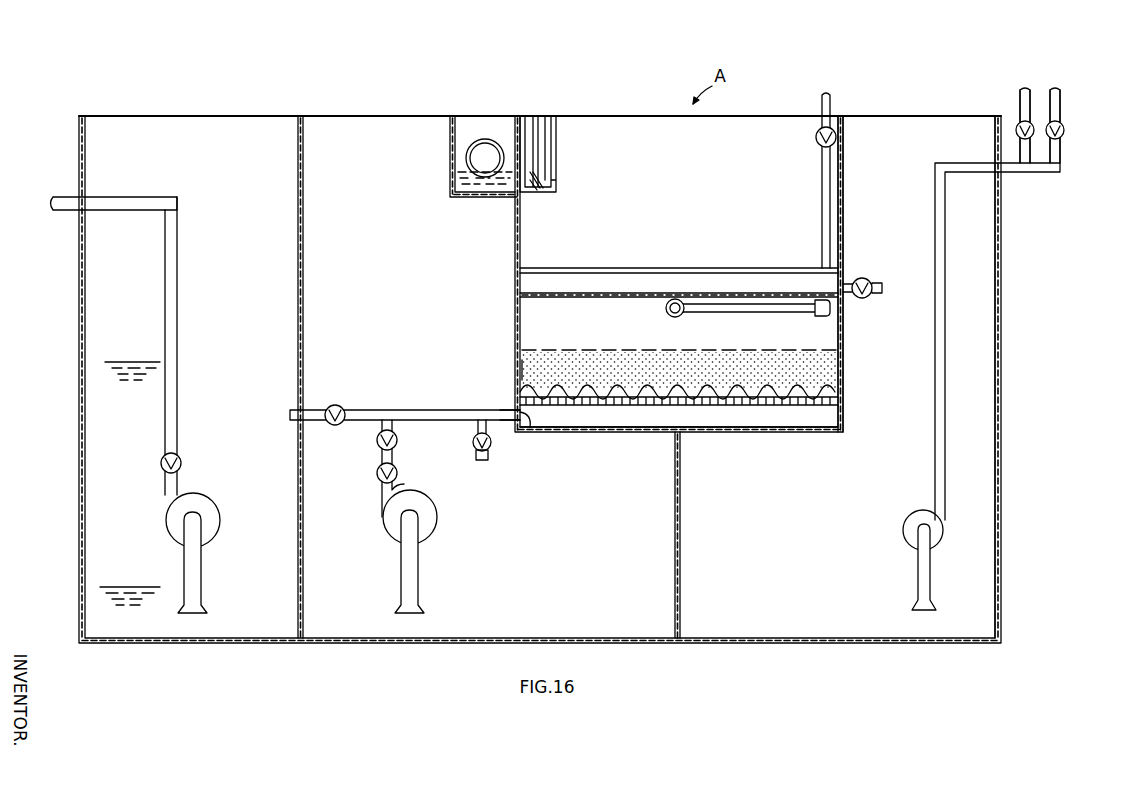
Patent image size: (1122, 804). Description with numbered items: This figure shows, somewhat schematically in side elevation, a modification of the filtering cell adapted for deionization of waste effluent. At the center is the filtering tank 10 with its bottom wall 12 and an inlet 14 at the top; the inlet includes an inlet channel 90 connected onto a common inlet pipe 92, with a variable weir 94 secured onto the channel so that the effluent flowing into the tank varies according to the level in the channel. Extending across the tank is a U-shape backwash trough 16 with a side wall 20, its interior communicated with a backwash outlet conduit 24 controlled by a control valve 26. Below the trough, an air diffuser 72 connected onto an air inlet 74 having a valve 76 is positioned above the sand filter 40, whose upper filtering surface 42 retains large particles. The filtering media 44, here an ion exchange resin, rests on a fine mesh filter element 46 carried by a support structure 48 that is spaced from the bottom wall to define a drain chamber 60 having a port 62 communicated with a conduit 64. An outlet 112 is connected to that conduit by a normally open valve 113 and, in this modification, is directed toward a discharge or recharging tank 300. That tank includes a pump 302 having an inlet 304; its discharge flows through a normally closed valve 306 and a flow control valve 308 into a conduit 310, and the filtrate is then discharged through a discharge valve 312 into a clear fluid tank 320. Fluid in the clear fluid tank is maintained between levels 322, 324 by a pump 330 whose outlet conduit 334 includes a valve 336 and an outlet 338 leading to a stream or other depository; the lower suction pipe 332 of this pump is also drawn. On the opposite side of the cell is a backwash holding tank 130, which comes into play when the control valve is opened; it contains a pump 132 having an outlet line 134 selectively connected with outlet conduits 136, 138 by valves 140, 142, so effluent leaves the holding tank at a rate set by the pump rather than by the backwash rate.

The filtering tank 10 is at (843, 150).
The bottom wall 12 is at (802, 432).
The inlet 14 is at (556, 140).
The trough 16 is at (668, 268).
The side wall 20 is at (710, 268).
The backwash outlet conduit 24 is at (848, 296).
The control valve 26 is at (866, 278).
The sand filter 40 is at (828, 357).
The upper filtering surface 42 is at (760, 350).
The filtering media 44 is at (522, 364).
The filter element 46 is at (828, 388).
The support structure 48 is at (835, 402).
The drain chamber 60 is at (590, 428).
The port 62 is at (530, 432).
The conduit 64 is at (502, 408).
The air diffuser 72 is at (668, 314).
The inlet 74 is at (822, 206).
The valve 76 is at (816, 138).
The inlet channel 90 is at (452, 160).
The inlet pipe 92 is at (468, 143).
The variable weir 94 is at (540, 178).
The outlet 112 is at (483, 460).
The valve 113 is at (472, 450).
The backwash holding tank 130 is at (904, 114).
The pump 132 is at (910, 516).
The outlet line 134 is at (945, 410).
The outlet conduit 136 is at (1018, 96).
The outlet conduit 138 is at (1060, 96).
The valve 140 is at (1017, 122).
The valve 142 is at (1063, 122).
The recharging tank 300 is at (400, 114).
The pump 302 is at (438, 500).
The inlet 304 is at (420, 556).
The normally closed valve 306 is at (376, 477).
The flow control valve 308 is at (398, 440).
The conduit 310 is at (432, 408).
The discharge valve 312 is at (340, 404).
The clear fluid tank 320 is at (218, 114).
The level 322 is at (128, 360).
The level 324 is at (136, 584).
The pump 330 is at (220, 504).
The suction pipe 332 is at (203, 556).
The outlet conduit 334 is at (180, 342).
The valve 336 is at (183, 466).
The outlet 338 is at (102, 197).